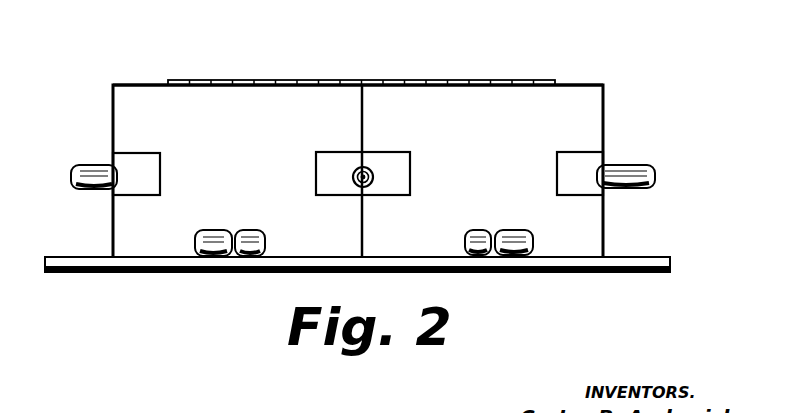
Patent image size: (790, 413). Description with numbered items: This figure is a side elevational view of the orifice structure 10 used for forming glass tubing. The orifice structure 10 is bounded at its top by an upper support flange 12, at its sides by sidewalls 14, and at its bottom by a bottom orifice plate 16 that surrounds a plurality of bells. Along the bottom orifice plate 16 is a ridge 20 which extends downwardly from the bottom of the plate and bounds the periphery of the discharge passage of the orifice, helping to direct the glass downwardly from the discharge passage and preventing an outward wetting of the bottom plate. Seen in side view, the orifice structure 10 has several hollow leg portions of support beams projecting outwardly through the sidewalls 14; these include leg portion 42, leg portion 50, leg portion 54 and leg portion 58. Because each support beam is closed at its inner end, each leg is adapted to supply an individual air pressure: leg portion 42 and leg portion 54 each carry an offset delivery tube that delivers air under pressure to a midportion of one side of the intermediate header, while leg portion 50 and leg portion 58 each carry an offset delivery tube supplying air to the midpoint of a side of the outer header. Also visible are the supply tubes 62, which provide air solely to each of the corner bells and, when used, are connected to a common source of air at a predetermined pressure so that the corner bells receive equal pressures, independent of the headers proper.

The orifice structure 10 is at (604, 92).
The upper support flange 12 is at (90, 257).
The sidewalls 14 is at (118, 104).
The bottom orifice plate 16 is at (578, 85).
The ridge 20 is at (250, 80).
The leg portion 42 is at (515, 230).
The leg portion 50 is at (215, 230).
The leg portion 54 is at (252, 230).
The leg portion 58 is at (470, 231).
The supply tubes 62 is at (95, 165).